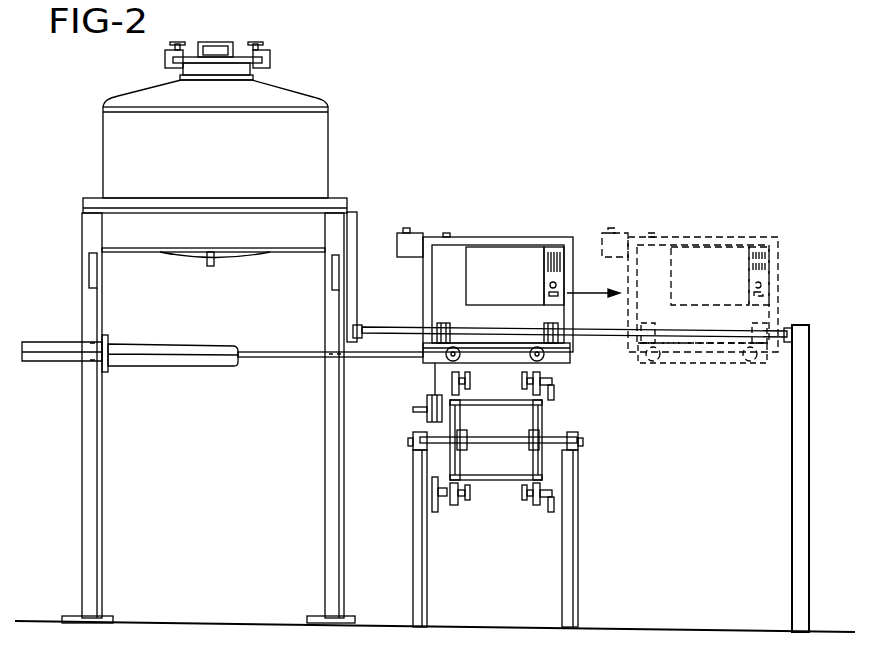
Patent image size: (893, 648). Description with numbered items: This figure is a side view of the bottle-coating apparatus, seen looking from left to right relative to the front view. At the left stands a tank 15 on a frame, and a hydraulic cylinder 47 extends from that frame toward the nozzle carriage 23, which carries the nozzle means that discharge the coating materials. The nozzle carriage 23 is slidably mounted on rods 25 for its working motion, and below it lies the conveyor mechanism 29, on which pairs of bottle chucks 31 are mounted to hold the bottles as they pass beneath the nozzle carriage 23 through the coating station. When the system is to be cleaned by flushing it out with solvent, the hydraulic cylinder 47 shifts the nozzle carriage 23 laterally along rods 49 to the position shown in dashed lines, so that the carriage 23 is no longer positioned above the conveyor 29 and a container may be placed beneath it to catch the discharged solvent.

The tank 15 is at (313, 127).
The nozzle carriage 23 is at (499, 228).
The rods 25 is at (432, 352).
The conveyor mechanism 29 is at (552, 418).
The bottle chucks 31 is at (457, 393).
The hydraulic cylinder 47 is at (160, 344).
The rods 49 is at (607, 337).